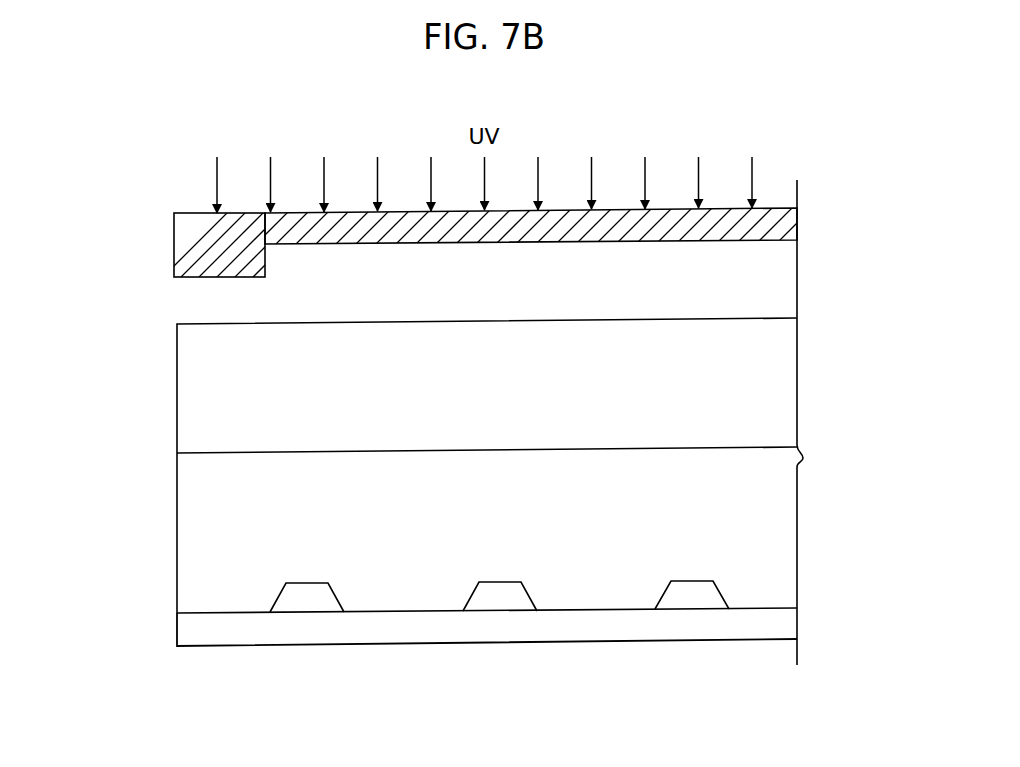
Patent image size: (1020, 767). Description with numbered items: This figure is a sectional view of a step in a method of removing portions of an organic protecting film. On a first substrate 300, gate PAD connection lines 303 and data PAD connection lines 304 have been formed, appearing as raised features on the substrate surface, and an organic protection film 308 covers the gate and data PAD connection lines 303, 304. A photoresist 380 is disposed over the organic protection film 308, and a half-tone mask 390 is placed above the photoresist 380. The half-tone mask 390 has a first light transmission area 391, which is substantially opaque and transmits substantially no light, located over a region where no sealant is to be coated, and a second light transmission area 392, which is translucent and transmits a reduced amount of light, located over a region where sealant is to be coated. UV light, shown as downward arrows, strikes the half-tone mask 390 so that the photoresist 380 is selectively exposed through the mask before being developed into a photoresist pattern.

The half-tone mask 390 is at (168, 207).
The first light transmission area 391 is at (185, 228).
The second light transmission area 392 is at (790, 220).
The photoresist 380 is at (785, 383).
The organic protection film 308 is at (788, 561).
The first substrate 300 is at (788, 623).
The gate PAD connection lines 303 is at (692, 600).
The data PAD connection lines 304 is at (499, 596).